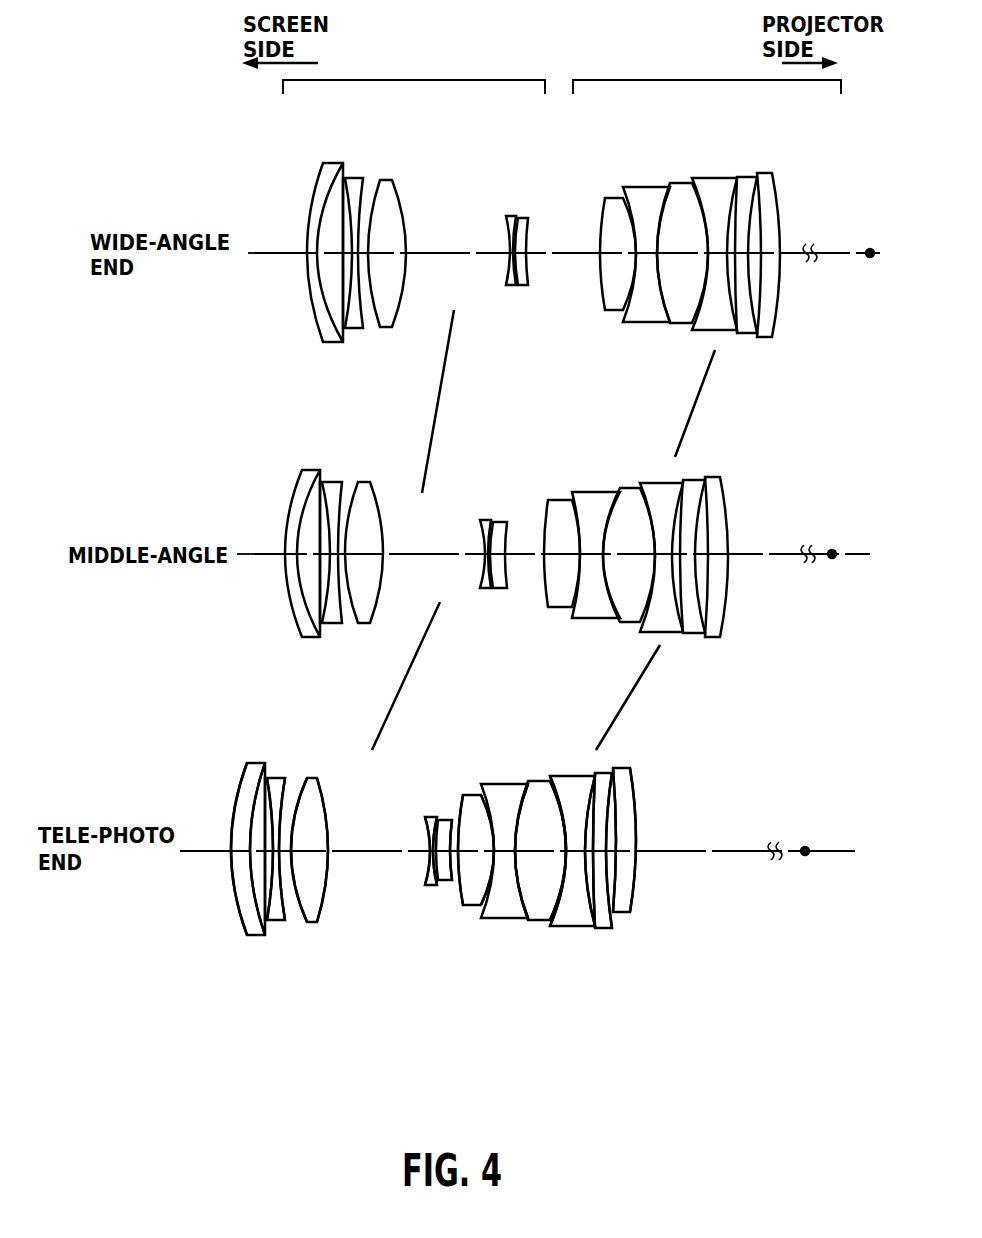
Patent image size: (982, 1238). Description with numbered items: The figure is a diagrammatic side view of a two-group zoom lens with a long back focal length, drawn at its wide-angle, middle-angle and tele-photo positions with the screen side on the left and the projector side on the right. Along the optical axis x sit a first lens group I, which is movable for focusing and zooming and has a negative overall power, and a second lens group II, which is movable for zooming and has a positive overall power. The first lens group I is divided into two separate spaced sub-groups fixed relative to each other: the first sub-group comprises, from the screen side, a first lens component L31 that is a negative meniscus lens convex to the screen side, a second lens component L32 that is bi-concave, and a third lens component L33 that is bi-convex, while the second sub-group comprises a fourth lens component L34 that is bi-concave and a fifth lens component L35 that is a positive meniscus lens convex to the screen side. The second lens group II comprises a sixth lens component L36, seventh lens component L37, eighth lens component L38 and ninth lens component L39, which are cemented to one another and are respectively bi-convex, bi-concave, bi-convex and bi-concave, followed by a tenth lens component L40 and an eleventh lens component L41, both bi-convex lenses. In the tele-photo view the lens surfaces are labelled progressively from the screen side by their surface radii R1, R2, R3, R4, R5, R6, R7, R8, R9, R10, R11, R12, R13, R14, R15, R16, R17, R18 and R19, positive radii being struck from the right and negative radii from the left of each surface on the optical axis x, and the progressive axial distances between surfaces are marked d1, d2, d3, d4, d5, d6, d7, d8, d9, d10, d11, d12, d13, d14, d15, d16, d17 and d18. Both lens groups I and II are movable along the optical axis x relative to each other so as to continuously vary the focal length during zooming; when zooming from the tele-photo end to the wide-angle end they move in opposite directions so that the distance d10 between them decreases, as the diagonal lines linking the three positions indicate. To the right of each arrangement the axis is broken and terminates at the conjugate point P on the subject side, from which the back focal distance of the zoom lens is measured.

The first lens group I is at (414, 70).
The second lens group II is at (707, 70).
The first lens component L31 is at (327, 163).
The second lens component L32 is at (352, 180).
The third lens component L33 is at (383, 180).
The fourth lens component L34 is at (506, 216).
The fifth lens component L35 is at (522, 218).
The sixth lens component L36 is at (605, 197).
The seventh lens component L37 is at (650, 187).
The eighth lens component L38 is at (675, 183).
The ninth lens component L39 is at (700, 178).
The tenth lens component L40 is at (745, 177).
The eleventh lens component L41 is at (770, 173).
The axial distance d1 is at (235, 848).
The axial distance d2 is at (248, 805).
The axial distance d3 is at (277, 805).
The axial distance d4 is at (290, 820).
The axial distance d5 is at (310, 835).
The axial distance d6 is at (352, 848).
The axial distance d7 is at (428, 851).
The axial distance d8 is at (430, 822).
The axial distance d9 is at (443, 828).
The axial distance d10 is at (457, 830).
The axial distance d11 is at (473, 800).
The axial distance d12 is at (508, 790).
The axial distance d13 is at (540, 790).
The axial distance d14 is at (565, 800).
The axial distance d15 is at (600, 800).
The axial distance d16 is at (640, 800).
The axial distance d17 is at (640, 820).
The axial distance d18 is at (645, 832).
The lens surface radius R1 is at (238, 902).
The lens surface radius R2 is at (243, 922).
The lens surface radius R3 is at (275, 923).
The lens surface radius R4 is at (283, 907).
The lens surface radius R5 is at (300, 907).
The lens surface radius R6 is at (320, 905).
The lens surface radius R7 is at (423, 872).
The lens surface radius R8 is at (425, 890).
The lens surface radius R9 is at (442, 900).
The lens surface radius R10 is at (448, 878).
The lens surface radius R11 is at (460, 907).
The lens surface radius R12 is at (488, 903).
The lens surface radius R13 is at (520, 902).
The lens surface radius R14 is at (540, 902).
The lens surface radius R15 is at (578, 902).
The lens surface radius R16 is at (603, 902).
The lens surface radius R17 is at (610, 920).
The lens surface radius R18 is at (623, 907).
The lens surface radius R19 is at (637, 890).
The optical axis x is at (752, 851).
The conjugate point P is at (805, 851).